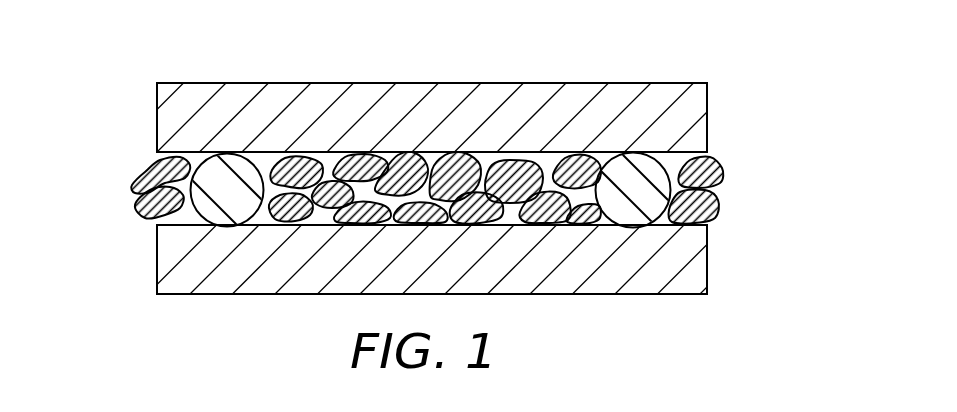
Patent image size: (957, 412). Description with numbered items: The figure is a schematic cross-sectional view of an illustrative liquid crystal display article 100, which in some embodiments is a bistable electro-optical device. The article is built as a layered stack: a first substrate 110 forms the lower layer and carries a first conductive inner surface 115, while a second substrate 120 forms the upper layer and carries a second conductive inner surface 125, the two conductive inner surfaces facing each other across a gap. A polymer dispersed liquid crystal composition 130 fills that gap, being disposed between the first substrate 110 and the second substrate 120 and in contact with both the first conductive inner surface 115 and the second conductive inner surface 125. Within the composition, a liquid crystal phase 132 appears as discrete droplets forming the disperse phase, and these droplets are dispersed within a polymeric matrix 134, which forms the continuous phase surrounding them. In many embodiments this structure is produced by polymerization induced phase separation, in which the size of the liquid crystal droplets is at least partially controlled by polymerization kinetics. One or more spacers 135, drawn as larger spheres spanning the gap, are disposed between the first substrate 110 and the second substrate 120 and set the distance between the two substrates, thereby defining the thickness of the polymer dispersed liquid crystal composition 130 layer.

The liquid crystal display article 100 is at (421, 147).
The first substrate 110 is at (694, 272).
The first conductive inner surface 115 is at (657, 225).
The second substrate 120 is at (693, 104).
The second conductive inner surface 125 is at (658, 152).
The polymer dispersed liquid crystal composition 130 is at (400, 156).
The liquid crystal phase 132 is at (362, 172).
The polymeric matrix 134 is at (492, 165).
The spacers 135 is at (230, 176).